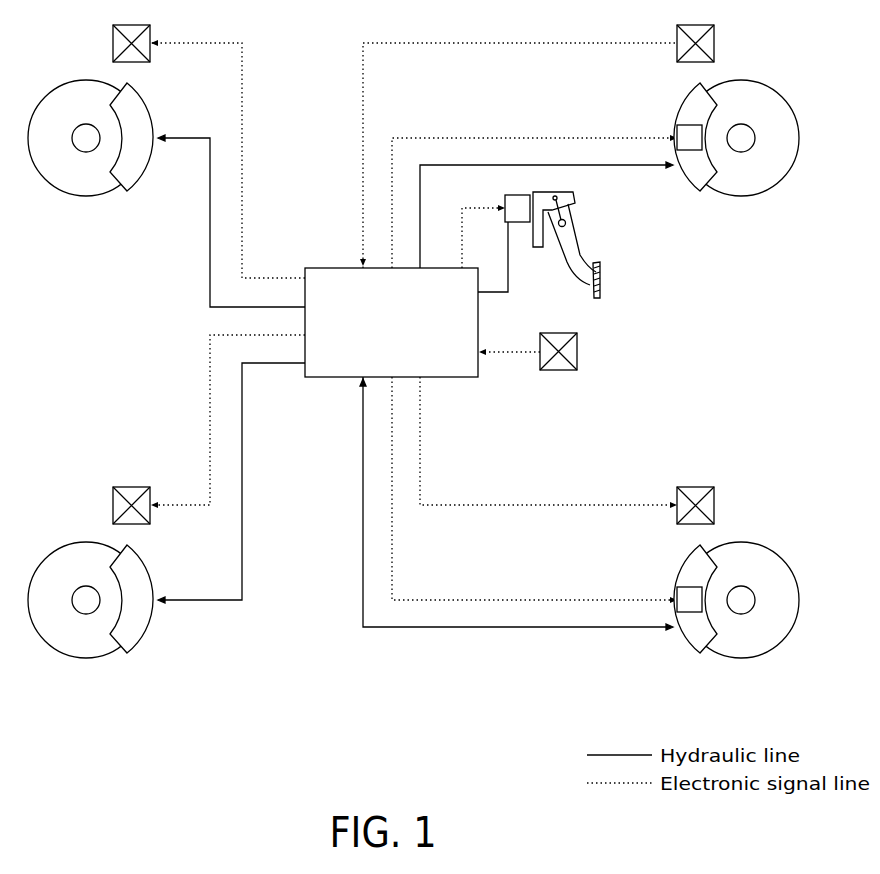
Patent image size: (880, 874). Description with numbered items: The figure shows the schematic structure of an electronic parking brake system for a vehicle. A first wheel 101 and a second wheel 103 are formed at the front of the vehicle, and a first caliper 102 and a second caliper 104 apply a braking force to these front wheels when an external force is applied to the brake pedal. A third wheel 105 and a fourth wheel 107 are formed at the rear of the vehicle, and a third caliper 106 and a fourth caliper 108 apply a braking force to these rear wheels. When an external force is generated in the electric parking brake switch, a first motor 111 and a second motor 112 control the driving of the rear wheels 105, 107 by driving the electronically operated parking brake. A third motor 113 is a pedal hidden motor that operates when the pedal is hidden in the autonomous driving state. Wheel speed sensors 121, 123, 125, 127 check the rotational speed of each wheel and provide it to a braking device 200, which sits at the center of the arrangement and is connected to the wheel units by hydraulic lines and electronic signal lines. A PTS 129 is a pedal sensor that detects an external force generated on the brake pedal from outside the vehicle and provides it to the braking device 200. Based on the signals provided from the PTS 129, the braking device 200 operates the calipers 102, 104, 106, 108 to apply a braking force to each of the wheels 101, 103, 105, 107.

The first wheel 101 is at (83, 186).
The first caliper 102 is at (138, 172).
The second wheel 103 is at (85, 650).
The second caliper 104 is at (138, 633).
The third wheel 105 is at (743, 185).
The third caliper 106 is at (690, 175).
The fourth wheel 107 is at (743, 645).
The fourth caliper 108 is at (690, 635).
The first motor 111 is at (677, 124).
The second motor 112 is at (677, 586).
The third motor 113 is at (505, 196).
The wheel speed sensor 121 is at (110, 41).
The wheel speed sensor 123 is at (110, 503).
The wheel speed sensor 125 is at (717, 43).
The wheel speed sensor 127 is at (717, 505).
The PTS 129 is at (580, 352).
The braking device 200 is at (325, 265).